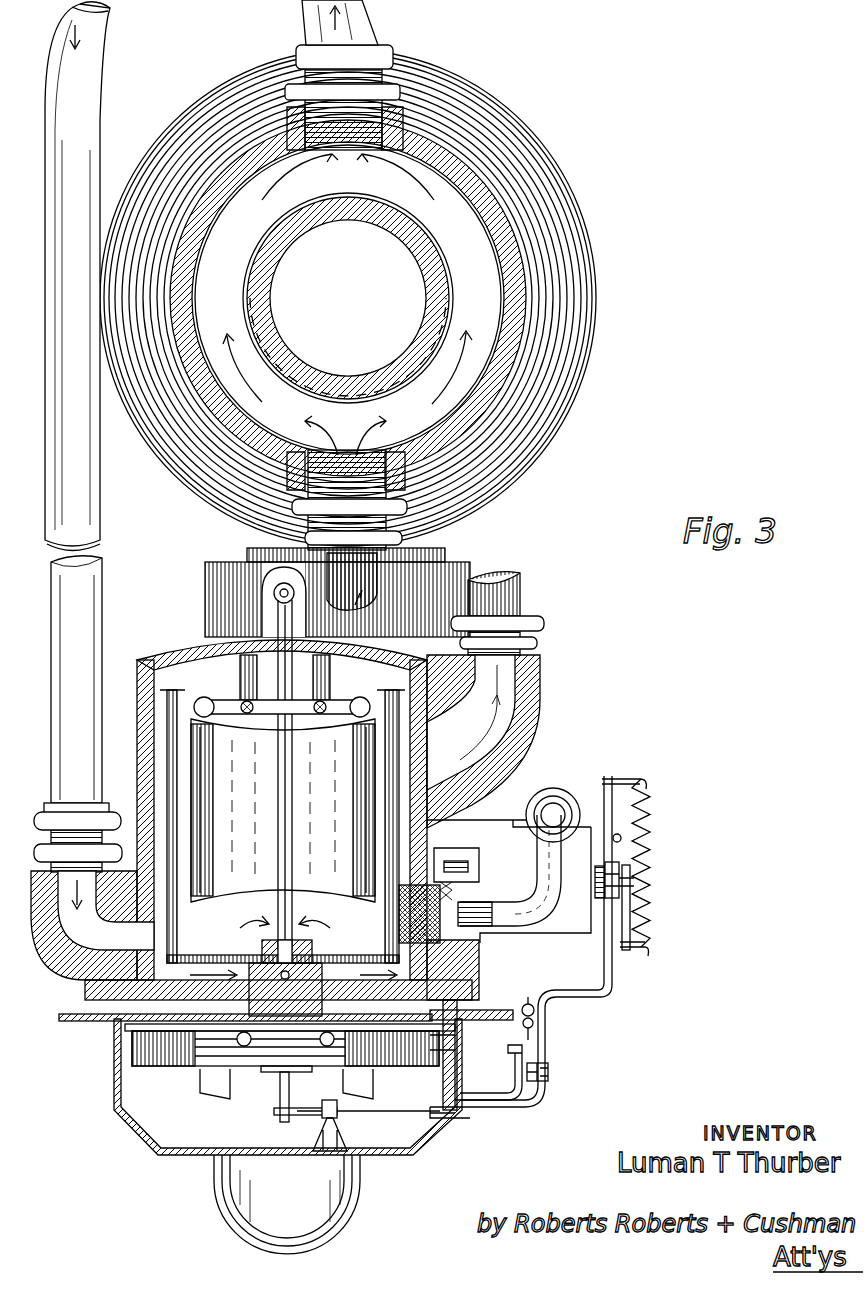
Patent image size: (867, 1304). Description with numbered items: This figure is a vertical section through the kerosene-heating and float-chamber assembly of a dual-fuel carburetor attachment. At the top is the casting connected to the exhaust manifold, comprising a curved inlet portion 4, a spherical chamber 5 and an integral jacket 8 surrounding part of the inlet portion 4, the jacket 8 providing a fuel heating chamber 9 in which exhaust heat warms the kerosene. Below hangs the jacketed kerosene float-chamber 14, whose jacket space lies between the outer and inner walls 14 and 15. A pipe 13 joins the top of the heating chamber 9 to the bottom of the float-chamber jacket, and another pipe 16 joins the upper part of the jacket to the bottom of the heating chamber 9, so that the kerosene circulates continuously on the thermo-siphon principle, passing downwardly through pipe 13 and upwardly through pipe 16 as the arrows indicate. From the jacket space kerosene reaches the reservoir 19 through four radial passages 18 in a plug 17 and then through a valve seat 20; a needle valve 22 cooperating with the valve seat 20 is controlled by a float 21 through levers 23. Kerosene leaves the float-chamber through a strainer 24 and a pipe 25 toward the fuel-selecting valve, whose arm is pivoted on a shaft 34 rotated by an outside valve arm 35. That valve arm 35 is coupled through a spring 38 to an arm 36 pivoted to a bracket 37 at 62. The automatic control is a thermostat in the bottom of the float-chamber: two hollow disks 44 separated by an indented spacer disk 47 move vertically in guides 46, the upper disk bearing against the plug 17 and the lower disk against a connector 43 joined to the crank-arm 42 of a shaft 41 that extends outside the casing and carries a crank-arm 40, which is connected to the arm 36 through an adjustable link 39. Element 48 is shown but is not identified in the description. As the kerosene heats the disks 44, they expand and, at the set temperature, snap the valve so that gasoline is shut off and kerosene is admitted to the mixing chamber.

The curved inlet portion 4 is at (425, 335).
The spherical chamber 5 is at (578, 240).
The jacket 8 is at (505, 215).
The fuel heating chamber 9 is at (478, 282).
The pipe 13 is at (348, 20).
The kerosene float-chamber 14 is at (143, 707).
The inner wall 15 is at (177, 671).
The pipe 16 is at (341, 569).
The plug 17 is at (132, 1003).
The radial passages 18 is at (398, 917).
The kerosene reservoir 19 is at (293, 948).
The valve seat 20 is at (290, 946).
The float 21 is at (195, 857).
The needle valve 22 is at (283, 891).
The levers 23 is at (205, 700).
The strainer 24 is at (448, 902).
The pipe 25 is at (547, 813).
The shaft 34 is at (618, 834).
The valve arm 35 is at (627, 953).
The arm 36 is at (603, 997).
The bracket 37 is at (533, 1098).
The spring 38 is at (646, 841).
The adjustable link 39 is at (532, 1003).
The crank-arm 40 is at (520, 1083).
The shaft 41 is at (480, 1117).
The crank-arm 42 is at (310, 1118).
The connector 43 is at (284, 1085).
The hollow disks 44 is at (114, 1054).
The guides 46 is at (453, 1117).
The indented spacer disk 47 is at (430, 1043).
The nut 48 is at (327, 1100).
The pivot 62 is at (548, 1080).